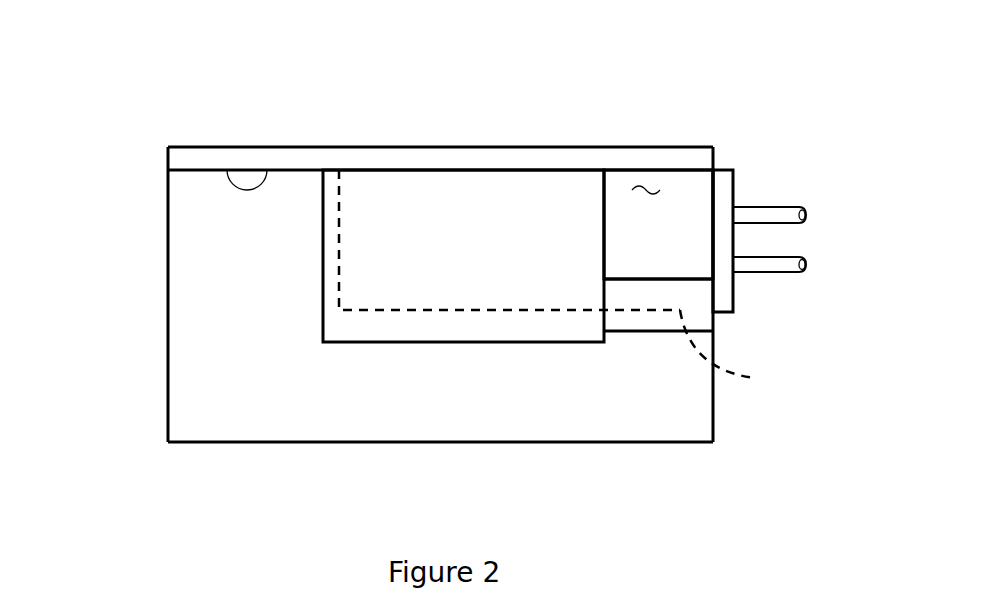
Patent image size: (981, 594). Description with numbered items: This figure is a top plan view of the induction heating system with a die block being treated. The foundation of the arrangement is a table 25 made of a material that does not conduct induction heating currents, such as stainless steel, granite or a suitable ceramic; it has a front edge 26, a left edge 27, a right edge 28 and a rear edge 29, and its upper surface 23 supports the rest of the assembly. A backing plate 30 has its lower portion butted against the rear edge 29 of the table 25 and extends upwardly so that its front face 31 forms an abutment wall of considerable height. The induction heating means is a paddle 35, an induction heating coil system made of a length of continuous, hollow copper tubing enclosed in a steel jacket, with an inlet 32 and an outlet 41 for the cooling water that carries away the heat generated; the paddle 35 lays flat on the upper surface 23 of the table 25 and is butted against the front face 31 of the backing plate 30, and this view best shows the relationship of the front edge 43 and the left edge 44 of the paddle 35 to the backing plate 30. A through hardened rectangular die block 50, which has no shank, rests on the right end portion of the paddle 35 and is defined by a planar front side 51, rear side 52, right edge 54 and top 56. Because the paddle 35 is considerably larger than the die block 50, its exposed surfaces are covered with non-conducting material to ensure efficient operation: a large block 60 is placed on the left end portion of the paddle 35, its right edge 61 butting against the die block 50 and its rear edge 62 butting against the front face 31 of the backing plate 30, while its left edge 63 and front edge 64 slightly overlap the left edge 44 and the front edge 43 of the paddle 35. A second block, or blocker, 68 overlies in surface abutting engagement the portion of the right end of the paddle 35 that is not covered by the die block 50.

The backing plate 30 is at (148, 115).
The front face 31 is at (268, 169).
The left edge of paddle 44 is at (340, 220).
The rear edge of block 62 is at (500, 170).
The rear side 52 is at (622, 170).
The top 56 is at (646, 185).
The die block 50 is at (683, 207).
The paddle 35 is at (728, 163).
The right edge 54 is at (717, 190).
The outlet 41 is at (780, 215).
The inlet 32 is at (783, 263).
The rear edge 29 is at (192, 168).
The upper surface 23 is at (218, 283).
The left edge 27 is at (168, 350).
The table 25 is at (147, 412).
The front edge 26 is at (232, 442).
The left edge of block 63 is at (322, 300).
The front edge of block 64 is at (383, 343).
The large block 60 is at (503, 343).
The right edge of block 61 is at (606, 257).
The second block 68 is at (668, 345).
The front side 51 is at (683, 279).
The front edge of paddle 43 is at (738, 350).
The right edge 28 is at (715, 410).